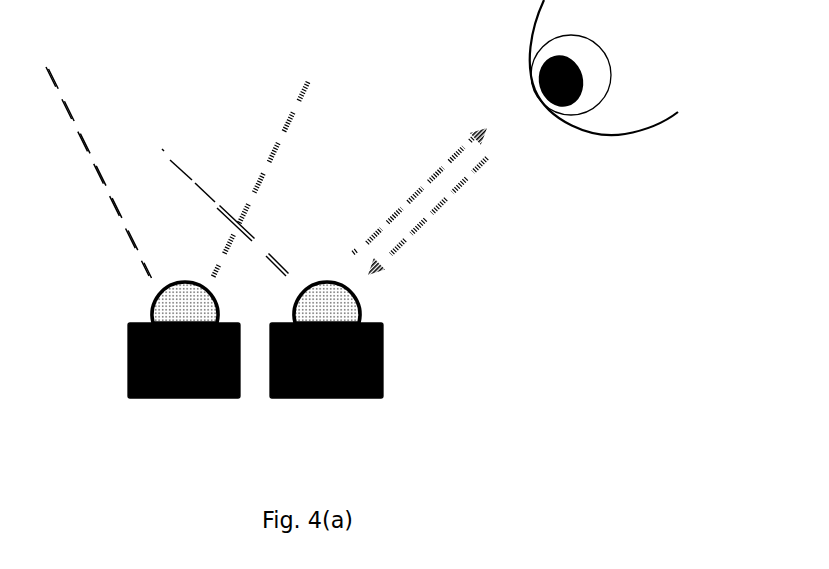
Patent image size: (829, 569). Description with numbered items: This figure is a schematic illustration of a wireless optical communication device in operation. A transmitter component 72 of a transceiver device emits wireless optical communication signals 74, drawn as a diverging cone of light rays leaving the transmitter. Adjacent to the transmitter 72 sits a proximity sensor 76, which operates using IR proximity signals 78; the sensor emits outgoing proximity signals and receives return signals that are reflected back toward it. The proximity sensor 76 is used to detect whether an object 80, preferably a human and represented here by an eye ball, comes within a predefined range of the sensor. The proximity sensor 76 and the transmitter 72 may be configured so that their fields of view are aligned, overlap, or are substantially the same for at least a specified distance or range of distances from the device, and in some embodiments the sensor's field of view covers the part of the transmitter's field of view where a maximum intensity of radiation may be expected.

The transmitter component 72 is at (128, 337).
The wireless optical communication signals 74 is at (283, 122).
The proximity sensor 76 is at (383, 337).
The IR proximity signals 78 is at (422, 192).
The object 80 is at (653, 35).